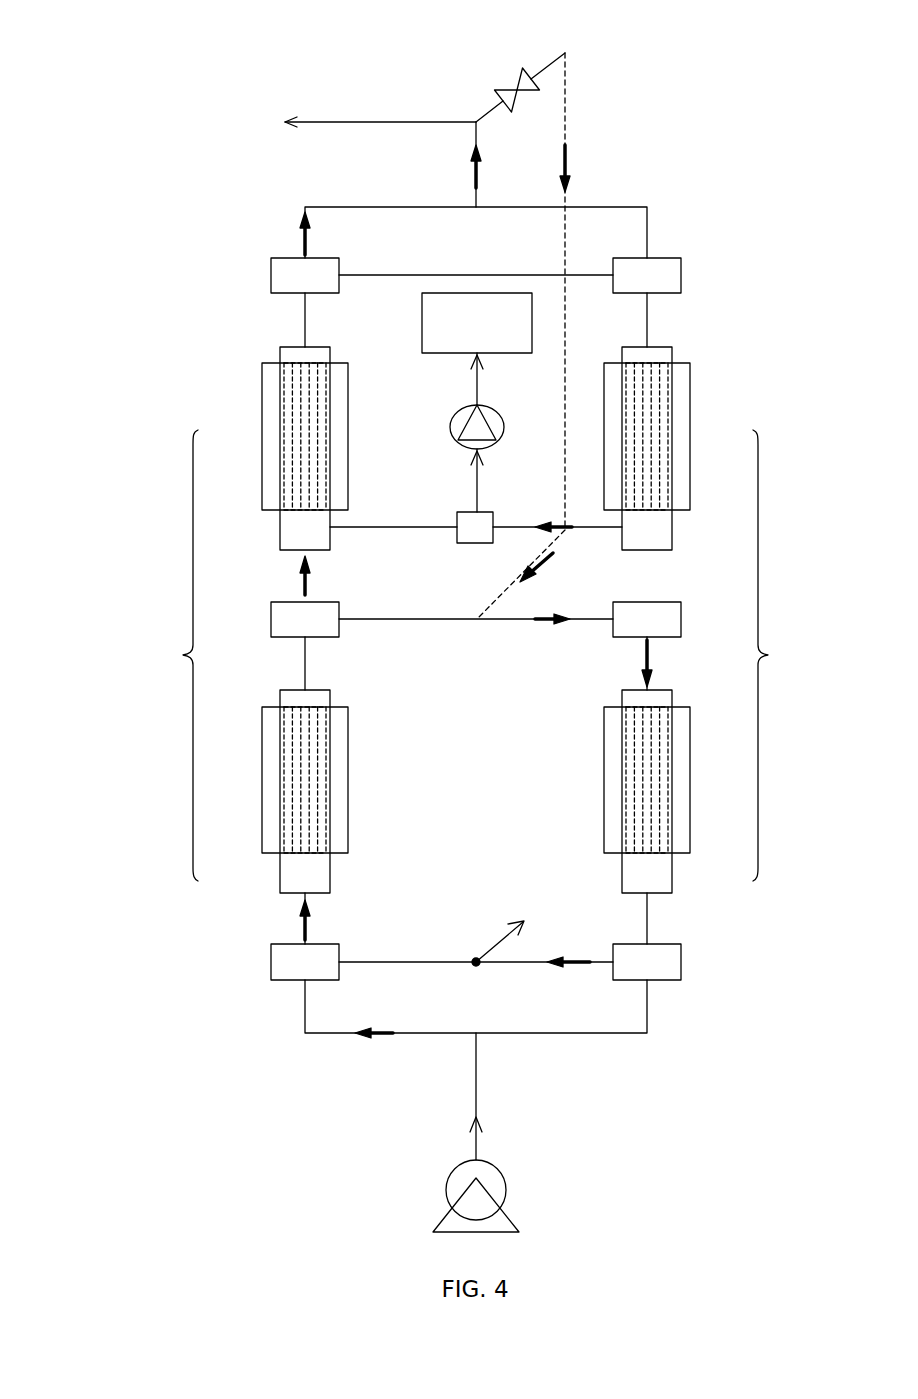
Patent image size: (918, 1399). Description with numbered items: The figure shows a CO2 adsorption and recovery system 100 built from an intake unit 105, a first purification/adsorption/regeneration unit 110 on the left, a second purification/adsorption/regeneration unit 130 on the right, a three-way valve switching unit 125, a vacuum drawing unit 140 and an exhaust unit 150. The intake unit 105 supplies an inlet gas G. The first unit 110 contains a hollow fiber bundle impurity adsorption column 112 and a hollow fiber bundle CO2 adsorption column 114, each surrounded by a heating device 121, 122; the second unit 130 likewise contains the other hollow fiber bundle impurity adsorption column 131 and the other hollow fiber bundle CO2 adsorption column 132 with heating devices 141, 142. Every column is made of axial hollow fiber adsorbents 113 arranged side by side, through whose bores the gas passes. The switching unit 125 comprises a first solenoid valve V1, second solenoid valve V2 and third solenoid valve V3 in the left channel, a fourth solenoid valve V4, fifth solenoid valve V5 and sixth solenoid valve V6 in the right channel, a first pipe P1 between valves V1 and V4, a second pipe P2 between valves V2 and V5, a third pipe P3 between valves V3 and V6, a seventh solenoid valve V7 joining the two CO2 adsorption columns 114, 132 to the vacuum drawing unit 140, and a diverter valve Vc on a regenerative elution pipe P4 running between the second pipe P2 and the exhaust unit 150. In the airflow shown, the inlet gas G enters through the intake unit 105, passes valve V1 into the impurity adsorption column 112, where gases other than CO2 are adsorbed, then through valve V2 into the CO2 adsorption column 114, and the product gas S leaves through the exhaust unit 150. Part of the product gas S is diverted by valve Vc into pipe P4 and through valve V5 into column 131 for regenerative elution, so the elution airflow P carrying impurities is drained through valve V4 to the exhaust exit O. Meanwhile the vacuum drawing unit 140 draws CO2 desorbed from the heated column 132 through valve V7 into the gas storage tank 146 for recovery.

The CO2 adsorption and recovery system 100 is at (85, 30).
The exhaust unit 150 is at (313, 166).
The three-way valve switching unit 125 is at (681, 236).
The diverter valve Vc is at (524, 71).
The regenerative elution pipe P4 is at (565, 105).
The elution airflow P is at (567, 160).
The product gas S is at (474, 173).
The third solenoid valve V3 is at (271, 278).
The sixth solenoid valve V6 is at (681, 277).
The third pipe P3 is at (403, 277).
The gas storage tank 146 is at (432, 355).
The vacuum drawing unit 140 is at (450, 428).
The seventh solenoid valve V7 is at (466, 520).
The hollow fiber adsorbents 113 is at (295, 390).
The heating device 122 is at (262, 439).
The hollow fiber bundle CO2 adsorption column 114 is at (280, 535).
The heating device 142 is at (690, 438).
The hollow fiber bundle CO2 adsorption column 132 is at (672, 535).
The first purification/adsorption/regeneration unit 110 is at (170, 655).
The second purification/adsorption/regeneration unit 130 is at (783, 655).
The second solenoid valve V2 is at (290, 615).
The fifth solenoid valve V5 is at (666, 615).
The second pipe P2 is at (402, 621).
The heating device 121 is at (262, 782).
The hollow fiber bundle impurity adsorption column 112 is at (280, 880).
The heating device 141 is at (690, 782).
The hollow fiber bundle impurity adsorption column 131 is at (672, 880).
The first solenoid valve V1 is at (288, 960).
The fourth solenoid valve V4 is at (665, 960).
The first pipe P1 is at (398, 958).
The exhaust exit O is at (476, 958).
The inlet gas G is at (380, 1040).
The intake unit 105 is at (446, 1190).